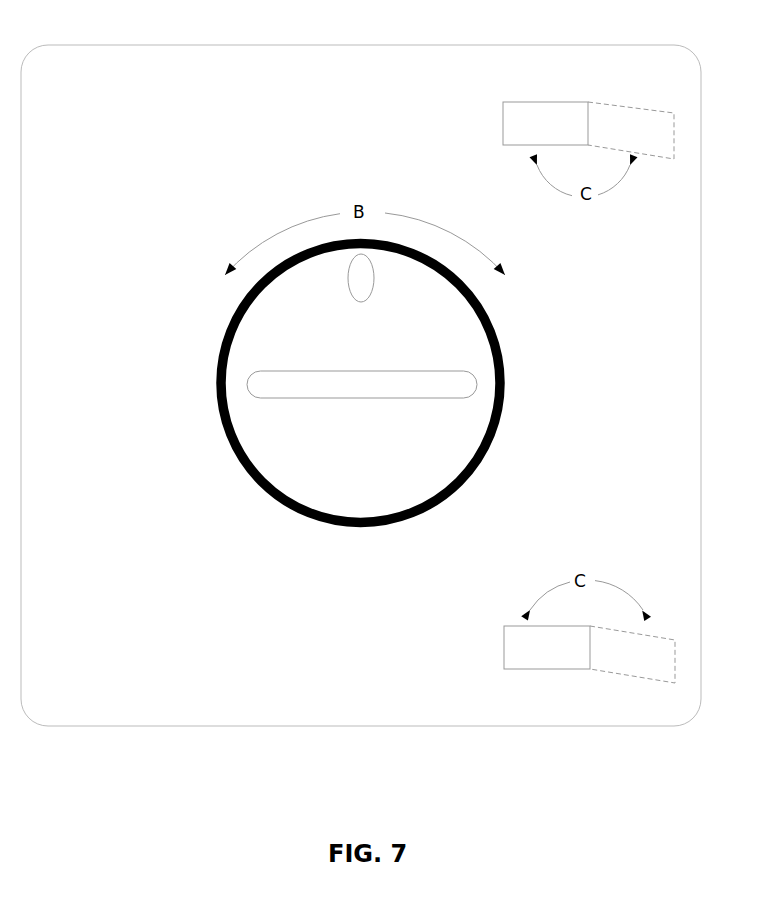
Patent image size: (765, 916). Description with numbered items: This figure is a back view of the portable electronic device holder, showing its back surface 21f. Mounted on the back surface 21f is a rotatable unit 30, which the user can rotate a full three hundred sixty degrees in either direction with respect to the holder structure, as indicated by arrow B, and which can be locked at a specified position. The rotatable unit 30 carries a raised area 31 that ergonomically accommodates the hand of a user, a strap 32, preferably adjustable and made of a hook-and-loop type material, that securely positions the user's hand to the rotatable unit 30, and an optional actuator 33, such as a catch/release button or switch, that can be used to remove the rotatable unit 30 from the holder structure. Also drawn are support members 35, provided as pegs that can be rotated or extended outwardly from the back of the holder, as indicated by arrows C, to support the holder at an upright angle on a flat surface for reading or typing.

The back surface 21f is at (160, 79).
The rotatable unit 30 is at (217, 426).
The raised area 31 is at (361, 383).
The strap 32 is at (362, 384).
The actuator 33 is at (361, 278).
The support members 35 is at (589, 392).